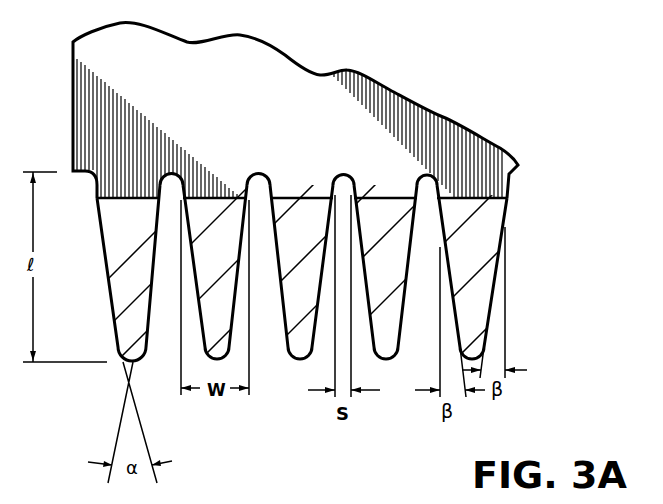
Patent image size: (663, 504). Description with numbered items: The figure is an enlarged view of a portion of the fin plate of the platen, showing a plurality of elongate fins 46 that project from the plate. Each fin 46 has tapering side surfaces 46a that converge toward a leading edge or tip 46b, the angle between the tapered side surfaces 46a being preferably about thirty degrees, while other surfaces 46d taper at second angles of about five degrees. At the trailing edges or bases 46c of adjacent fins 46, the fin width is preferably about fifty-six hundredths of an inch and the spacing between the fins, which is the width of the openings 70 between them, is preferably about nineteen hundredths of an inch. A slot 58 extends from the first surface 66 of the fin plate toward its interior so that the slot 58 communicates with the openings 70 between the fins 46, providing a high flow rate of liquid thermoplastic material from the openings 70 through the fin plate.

The slot 58 is at (200, 90).
The first surface 66 is at (307, 195).
The elongate fin 46 is at (335, 287).
The tapering side surface 46a is at (118, 343).
The leading edge or tip 46b is at (300, 363).
The trailing edge or base 46c is at (259, 170).
The surface 46d is at (443, 238).
The opening 70 is at (168, 337).